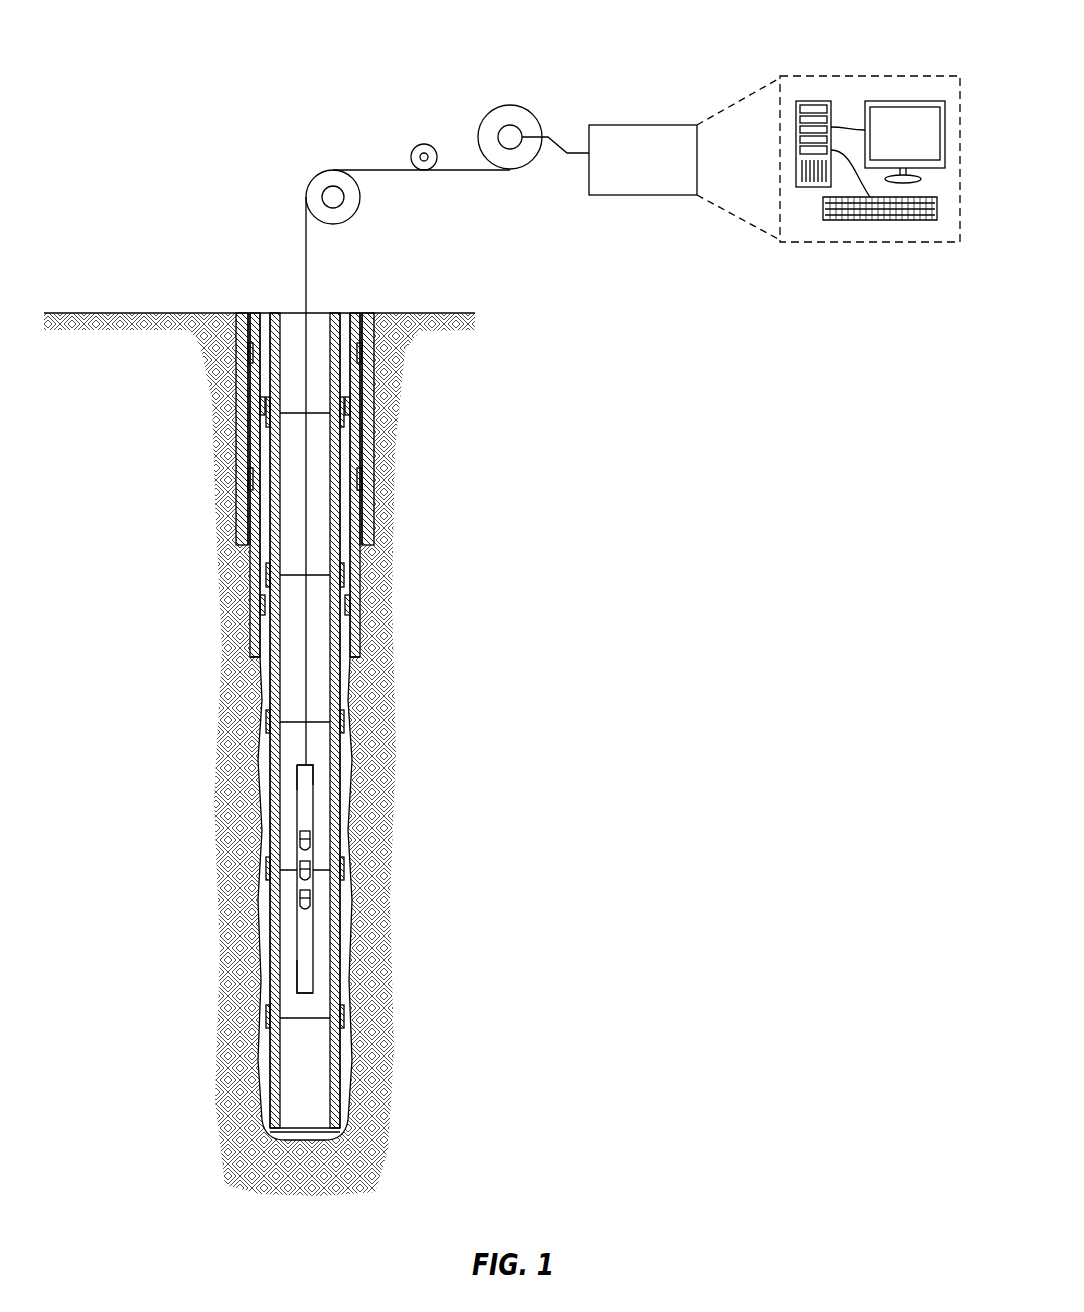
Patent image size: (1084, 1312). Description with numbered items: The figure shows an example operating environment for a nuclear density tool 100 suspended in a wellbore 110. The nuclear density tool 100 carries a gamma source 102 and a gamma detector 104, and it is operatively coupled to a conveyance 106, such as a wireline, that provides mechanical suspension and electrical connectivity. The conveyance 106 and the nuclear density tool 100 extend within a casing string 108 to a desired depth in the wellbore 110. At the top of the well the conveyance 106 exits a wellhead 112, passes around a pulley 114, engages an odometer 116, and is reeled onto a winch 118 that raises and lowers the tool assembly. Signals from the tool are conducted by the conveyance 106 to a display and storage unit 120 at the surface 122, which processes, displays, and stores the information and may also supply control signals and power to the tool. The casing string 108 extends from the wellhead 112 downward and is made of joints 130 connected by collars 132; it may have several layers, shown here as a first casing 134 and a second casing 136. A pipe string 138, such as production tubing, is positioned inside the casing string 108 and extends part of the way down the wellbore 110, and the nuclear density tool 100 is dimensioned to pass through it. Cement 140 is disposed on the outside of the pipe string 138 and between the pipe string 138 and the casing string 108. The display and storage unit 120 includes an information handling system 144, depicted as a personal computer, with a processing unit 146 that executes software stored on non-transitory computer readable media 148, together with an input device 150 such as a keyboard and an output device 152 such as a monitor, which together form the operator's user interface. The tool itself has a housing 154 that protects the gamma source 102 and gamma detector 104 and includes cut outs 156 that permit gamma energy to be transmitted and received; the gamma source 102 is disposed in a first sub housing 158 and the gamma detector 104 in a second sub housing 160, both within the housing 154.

The nuclear density tool 100 is at (308, 872).
The gamma source 102 is at (313, 932).
The gamma detector 104 is at (314, 833).
The conveyance 106 is at (310, 275).
The casing string 108 is at (232, 535).
The wellbore 110 is at (355, 663).
The wellhead 112 is at (293, 307).
The pulley 114 is at (306, 184).
The odometer 116 is at (425, 144).
The winch 118 is at (529, 107).
The display and storage unit 120 is at (649, 125).
The surface 122 is at (86, 313).
The joint 130 is at (255, 572).
The collar 132 is at (255, 613).
The first casing 134 is at (365, 575).
The second casing 136 is at (372, 530).
The pipe string 138 is at (345, 1087).
The cement 140 is at (355, 778).
The information handling system 144 is at (854, 76).
The processing unit 146 is at (810, 196).
The non-transitory computer readable media 148 is at (813, 101).
The input device 150 is at (874, 222).
The output device 152 is at (905, 101).
The housing 154 is at (297, 780).
The cut out 156 is at (297, 843).
The first sub housing 158 is at (315, 790).
The second sub housing 160 is at (297, 962).